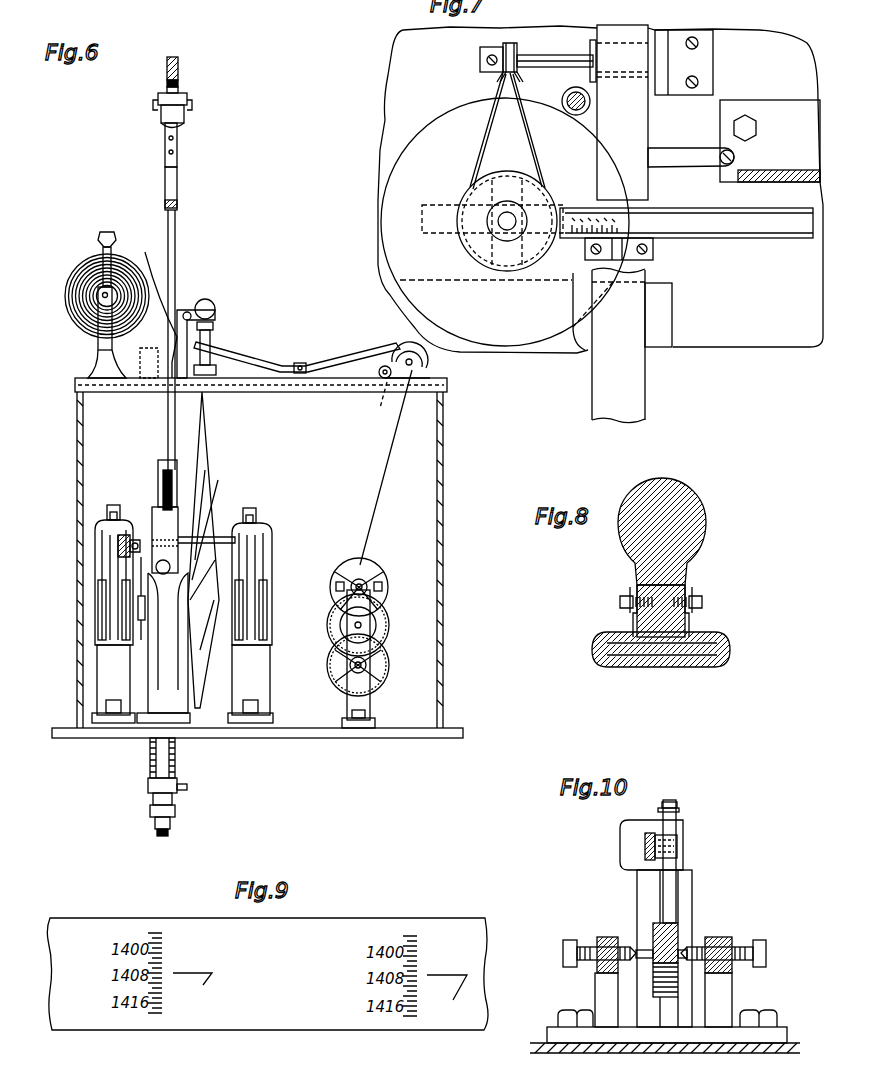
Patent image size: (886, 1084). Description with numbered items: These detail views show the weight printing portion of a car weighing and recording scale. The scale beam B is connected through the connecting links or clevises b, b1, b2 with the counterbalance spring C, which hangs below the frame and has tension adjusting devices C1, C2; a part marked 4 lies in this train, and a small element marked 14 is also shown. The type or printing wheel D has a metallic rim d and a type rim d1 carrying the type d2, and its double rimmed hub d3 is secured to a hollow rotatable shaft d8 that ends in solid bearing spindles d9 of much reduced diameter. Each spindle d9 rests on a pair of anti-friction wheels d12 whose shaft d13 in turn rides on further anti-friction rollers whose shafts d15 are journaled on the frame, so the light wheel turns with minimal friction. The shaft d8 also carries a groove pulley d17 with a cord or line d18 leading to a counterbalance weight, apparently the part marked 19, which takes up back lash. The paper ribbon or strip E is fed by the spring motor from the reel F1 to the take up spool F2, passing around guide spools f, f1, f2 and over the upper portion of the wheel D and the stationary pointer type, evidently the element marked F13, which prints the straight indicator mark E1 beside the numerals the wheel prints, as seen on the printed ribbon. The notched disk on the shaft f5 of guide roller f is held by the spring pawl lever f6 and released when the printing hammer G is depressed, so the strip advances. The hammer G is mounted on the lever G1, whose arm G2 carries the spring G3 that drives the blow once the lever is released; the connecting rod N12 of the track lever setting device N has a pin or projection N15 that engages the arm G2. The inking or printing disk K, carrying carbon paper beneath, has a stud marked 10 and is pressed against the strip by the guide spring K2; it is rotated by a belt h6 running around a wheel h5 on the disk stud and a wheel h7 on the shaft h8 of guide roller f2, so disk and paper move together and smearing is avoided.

In FIG. 6, the scale beam B is at (180, 68).
In FIG. 6, the connecting link or clevis b is at (178, 140).
In FIG. 6, the connecting link or clevis b1 is at (178, 185).
In FIG. 6, the connecting link or clevis b2 is at (176, 240).
In FIG. 7, the connecting link or clevis b2 is at (572, 113).
In FIG. 6, the rod 14 is at (58, 605).
In FIG. 6, the track lever setting device N is at (154, 300).
In FIG. 6, the connecting rod N12 is at (189, 312).
In FIG. 10, the connecting rod N12 is at (645, 840).
In FIG. 6, the reel or spool F1 is at (390, 603).
In FIG. 6, the guide spool f2 is at (137, 362).
In FIG. 6, the printing hammer G is at (215, 310).
In FIG. 8, the printing hammer G is at (653, 572).
In FIG. 6, the printing hammer lever G1 is at (212, 340).
In FIG. 10, the printing hammer lever G1 is at (653, 937).
In FIG. 6, the lever F13 is at (215, 368).
In FIG. 7, the lever F13 is at (630, 250).
In FIG. 6, the spring pawl lever f6 is at (360, 348).
In FIG. 6, the shaft of guide roller f5 is at (407, 357).
In FIG. 6, the guide spool f is at (428, 363).
In FIG. 6, the guide spool f1 is at (386, 405).
In FIG. 6, the type or printing wheel D is at (205, 422).
In FIG. 7, the type or printing wheel D is at (707, 235).
In FIG. 6, the rod 4 is at (187, 428).
In FIG. 6, the groove pulley d17 is at (137, 538).
In FIG. 6, the double rimmed hub d3 is at (213, 503).
In FIG. 6, the hollow rotatable shaft d8 is at (230, 537).
In FIG. 6, the bearing spindle d9 is at (262, 540).
In FIG. 6, the anti-friction wheel d12 is at (258, 556).
In FIG. 6, the shaft of anti-friction wheel d13 is at (292, 582).
In FIG. 6, the shaft of anti-friction roller d15 is at (272, 598).
In FIG. 6, the cord or line d18 is at (140, 556).
In FIG. 6, the metallic rim d is at (95, 600).
In FIG. 6, the rod 19 is at (144, 654).
In FIG. 6, the take up spool F2 is at (370, 628).
In FIG. 6, the counterbalance spring C is at (178, 756).
In FIG. 6, the tension adjusting device C1 is at (188, 790).
In FIG. 6, the tension adjusting device C2 is at (155, 831).
In FIG. 7, the wheel h7 is at (519, 48).
In FIG. 7, the shaft of guide roller h8 is at (552, 65).
In FIG. 7, the belt h6 is at (478, 140).
In FIG. 7, the inking disk K is at (505, 222).
In FIG. 7, the hub 10 is at (505, 222).
In FIG. 7, the wheel h5 is at (496, 268).
In FIG. 7, the guide spring K2 is at (691, 156).
In FIG. 7, the type d2 is at (582, 217).
In FIG. 7, the type rim d1 is at (686, 223).
In FIG. 7, the paper ribbon or strip E is at (609, 345).
In FIG. 9, the indicator mark E1 is at (320, 993).
In FIG. 10, the arm of printing hammer lever G2 is at (670, 797).
In FIG. 10, the spring G3 is at (679, 806).
In FIG. 10, the pin or projection N15 is at (677, 835).